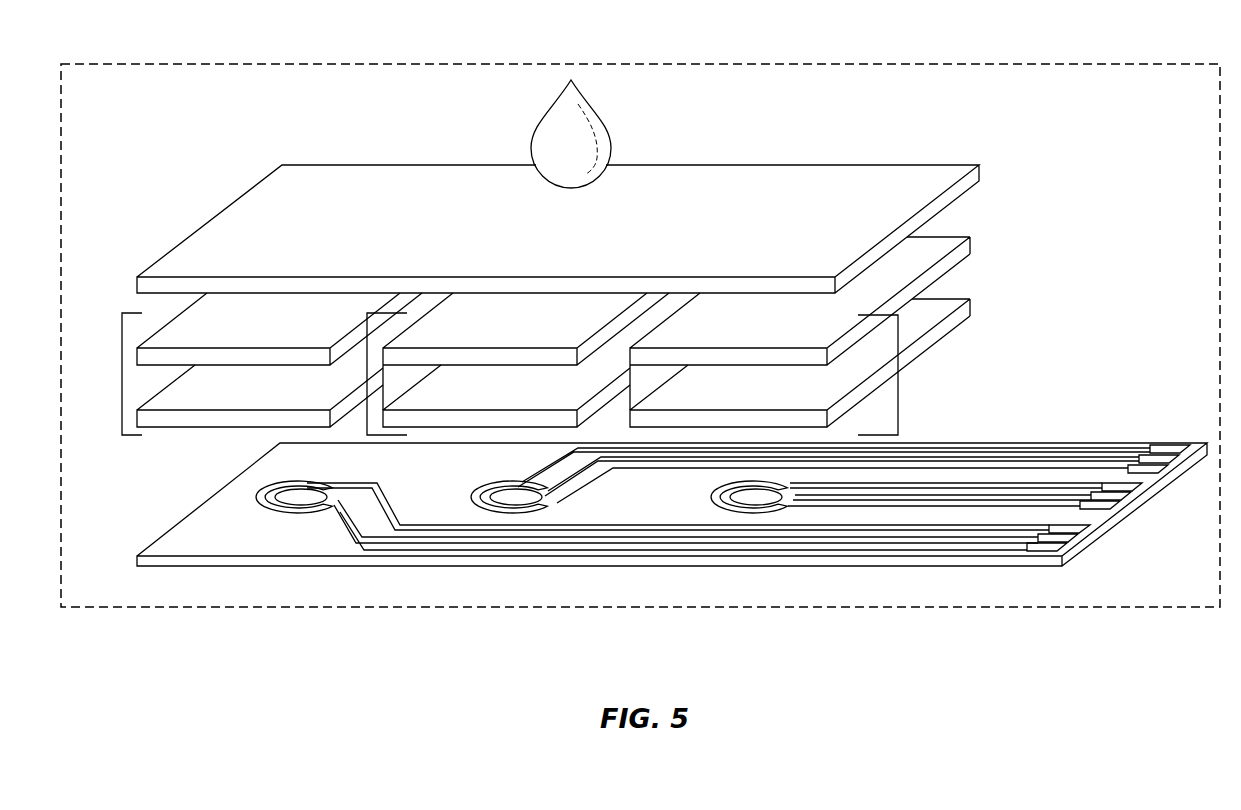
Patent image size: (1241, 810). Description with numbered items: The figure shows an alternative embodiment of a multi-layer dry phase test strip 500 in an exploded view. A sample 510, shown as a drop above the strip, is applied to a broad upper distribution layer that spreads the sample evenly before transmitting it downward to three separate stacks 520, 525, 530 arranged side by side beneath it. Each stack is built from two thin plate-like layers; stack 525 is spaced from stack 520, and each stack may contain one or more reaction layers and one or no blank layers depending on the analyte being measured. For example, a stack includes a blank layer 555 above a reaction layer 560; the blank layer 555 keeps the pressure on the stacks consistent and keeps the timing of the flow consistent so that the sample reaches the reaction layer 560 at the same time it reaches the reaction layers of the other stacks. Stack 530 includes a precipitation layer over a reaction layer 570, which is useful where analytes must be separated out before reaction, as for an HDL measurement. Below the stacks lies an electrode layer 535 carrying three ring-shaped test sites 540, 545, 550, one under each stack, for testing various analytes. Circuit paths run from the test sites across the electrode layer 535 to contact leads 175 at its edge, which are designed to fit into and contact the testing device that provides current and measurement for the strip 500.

The test strip 500 is at (201, 63).
The sample 510 is at (531, 140).
The blank layer 555 is at (245, 332).
The reaction layer 560 is at (178, 420).
The stack 520 is at (122, 377).
The stack 525 is at (367, 382).
The stack 530 is at (903, 383).
The reaction layer 570 is at (450, 418).
The electrode layer 535 is at (208, 530).
The test site 540 is at (278, 512).
The test site 545 is at (493, 513).
The test site 550 is at (730, 512).
The contact leads 175 is at (1087, 520).